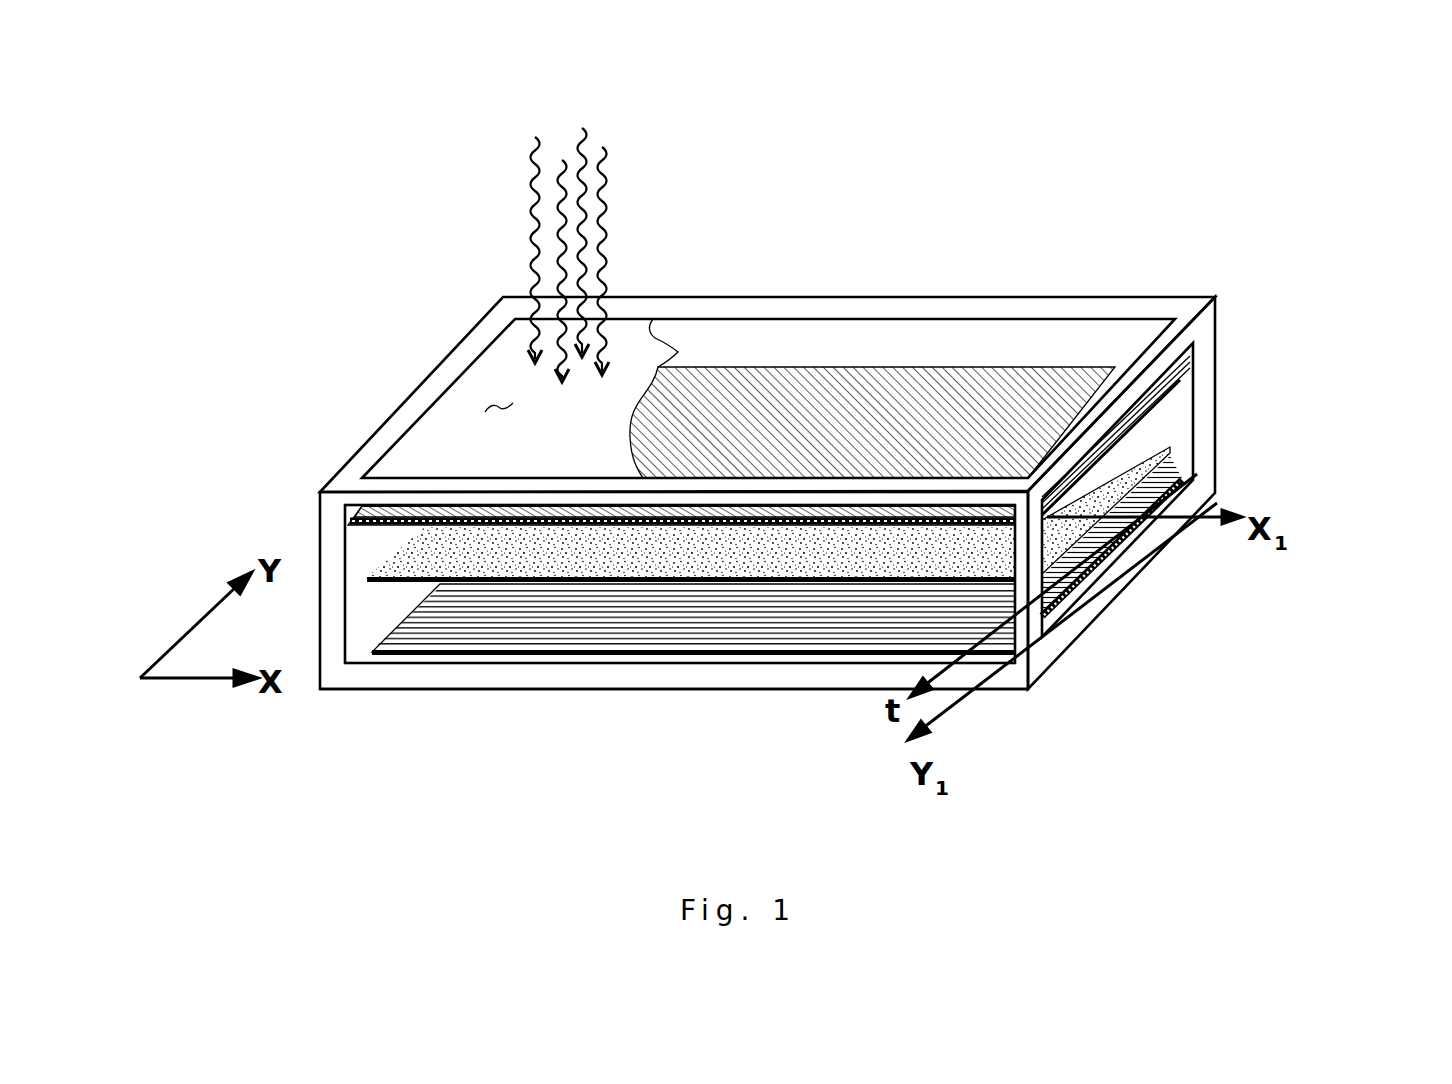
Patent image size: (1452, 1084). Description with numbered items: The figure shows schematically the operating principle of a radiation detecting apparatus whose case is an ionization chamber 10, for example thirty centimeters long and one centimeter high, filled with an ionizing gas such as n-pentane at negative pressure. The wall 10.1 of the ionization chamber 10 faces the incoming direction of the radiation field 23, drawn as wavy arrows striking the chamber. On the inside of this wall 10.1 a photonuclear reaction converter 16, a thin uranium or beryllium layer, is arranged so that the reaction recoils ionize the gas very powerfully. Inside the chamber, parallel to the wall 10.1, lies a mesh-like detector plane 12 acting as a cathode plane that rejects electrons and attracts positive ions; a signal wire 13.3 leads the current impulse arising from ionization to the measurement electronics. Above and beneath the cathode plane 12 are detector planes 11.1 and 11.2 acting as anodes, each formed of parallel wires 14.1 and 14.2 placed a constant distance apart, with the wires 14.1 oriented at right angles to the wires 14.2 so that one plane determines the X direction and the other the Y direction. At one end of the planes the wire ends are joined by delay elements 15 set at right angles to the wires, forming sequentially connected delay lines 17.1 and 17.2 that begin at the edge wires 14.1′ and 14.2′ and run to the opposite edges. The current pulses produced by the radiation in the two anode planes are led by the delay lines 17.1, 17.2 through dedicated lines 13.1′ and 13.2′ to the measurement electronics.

The ionization chamber 10 is at (1205, 328).
The wall of the ionization chamber 10.1 is at (497, 403).
The detector plane (anode plane) 11.1 is at (982, 420).
The detector plane (anode plane) 11.2 is at (592, 620).
The detector plane (cathode plane) 12 is at (793, 560).
The line 13.1′ is at (1192, 522).
The line 13.2′ is at (969, 690).
The signal wire 13.3 is at (920, 672).
The wires of anode plane 11.1 14.1 is at (838, 413).
The wire nearest the edge of anode plane 11.1 14.1′ is at (350, 507).
The wires of anode plane 11.2 14.2 is at (840, 613).
The wire nearest the edge of anode plane 11.2 14.2′ is at (1165, 464).
The delay elements 15 is at (388, 528).
The photonuclear reaction converter 16 is at (688, 348).
The delay line 17.1 is at (538, 512).
The delay line 17.2 is at (1122, 543).
The radiation field 23 is at (500, 203).